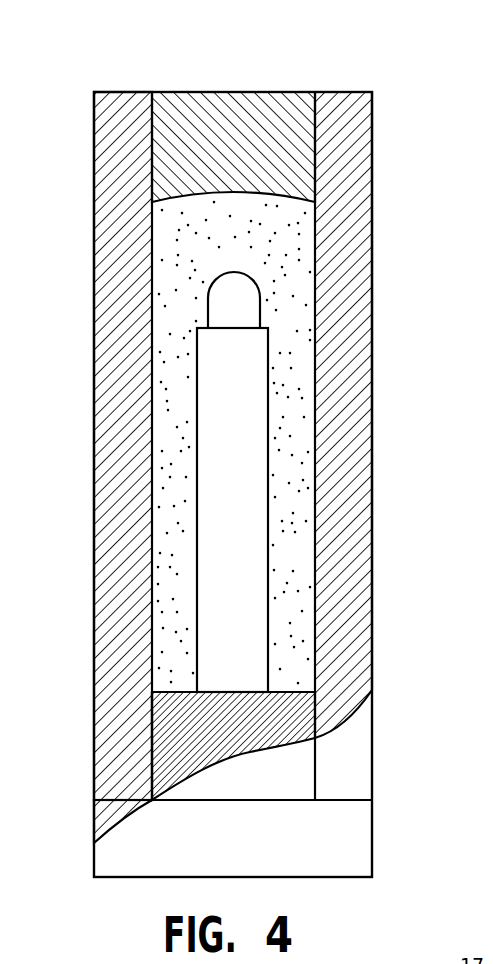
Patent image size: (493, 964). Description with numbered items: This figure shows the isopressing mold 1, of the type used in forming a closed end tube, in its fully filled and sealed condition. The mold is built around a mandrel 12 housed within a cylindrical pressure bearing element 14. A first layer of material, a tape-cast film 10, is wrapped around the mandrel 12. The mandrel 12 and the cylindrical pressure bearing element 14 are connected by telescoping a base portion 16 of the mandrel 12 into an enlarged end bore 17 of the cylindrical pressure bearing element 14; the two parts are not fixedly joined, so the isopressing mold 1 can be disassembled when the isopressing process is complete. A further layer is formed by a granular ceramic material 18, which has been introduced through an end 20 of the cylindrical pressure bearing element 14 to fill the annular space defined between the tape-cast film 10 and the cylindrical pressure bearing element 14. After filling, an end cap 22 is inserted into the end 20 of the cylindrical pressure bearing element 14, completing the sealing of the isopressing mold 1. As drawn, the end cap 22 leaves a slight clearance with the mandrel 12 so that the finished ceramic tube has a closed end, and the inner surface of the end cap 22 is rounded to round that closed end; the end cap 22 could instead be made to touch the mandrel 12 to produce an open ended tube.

The isopressing mold 1 is at (407, 259).
The tape-cast film 10 is at (250, 393).
The mandrel 12 is at (247, 312).
The cylindrical pressure bearing element 14 is at (360, 173).
The base portion 16 is at (168, 735).
The enlarged end bore 17 is at (162, 711).
The ceramic material 18 is at (297, 563).
The end 20 is at (120, 103).
The end cap 22 is at (218, 108).